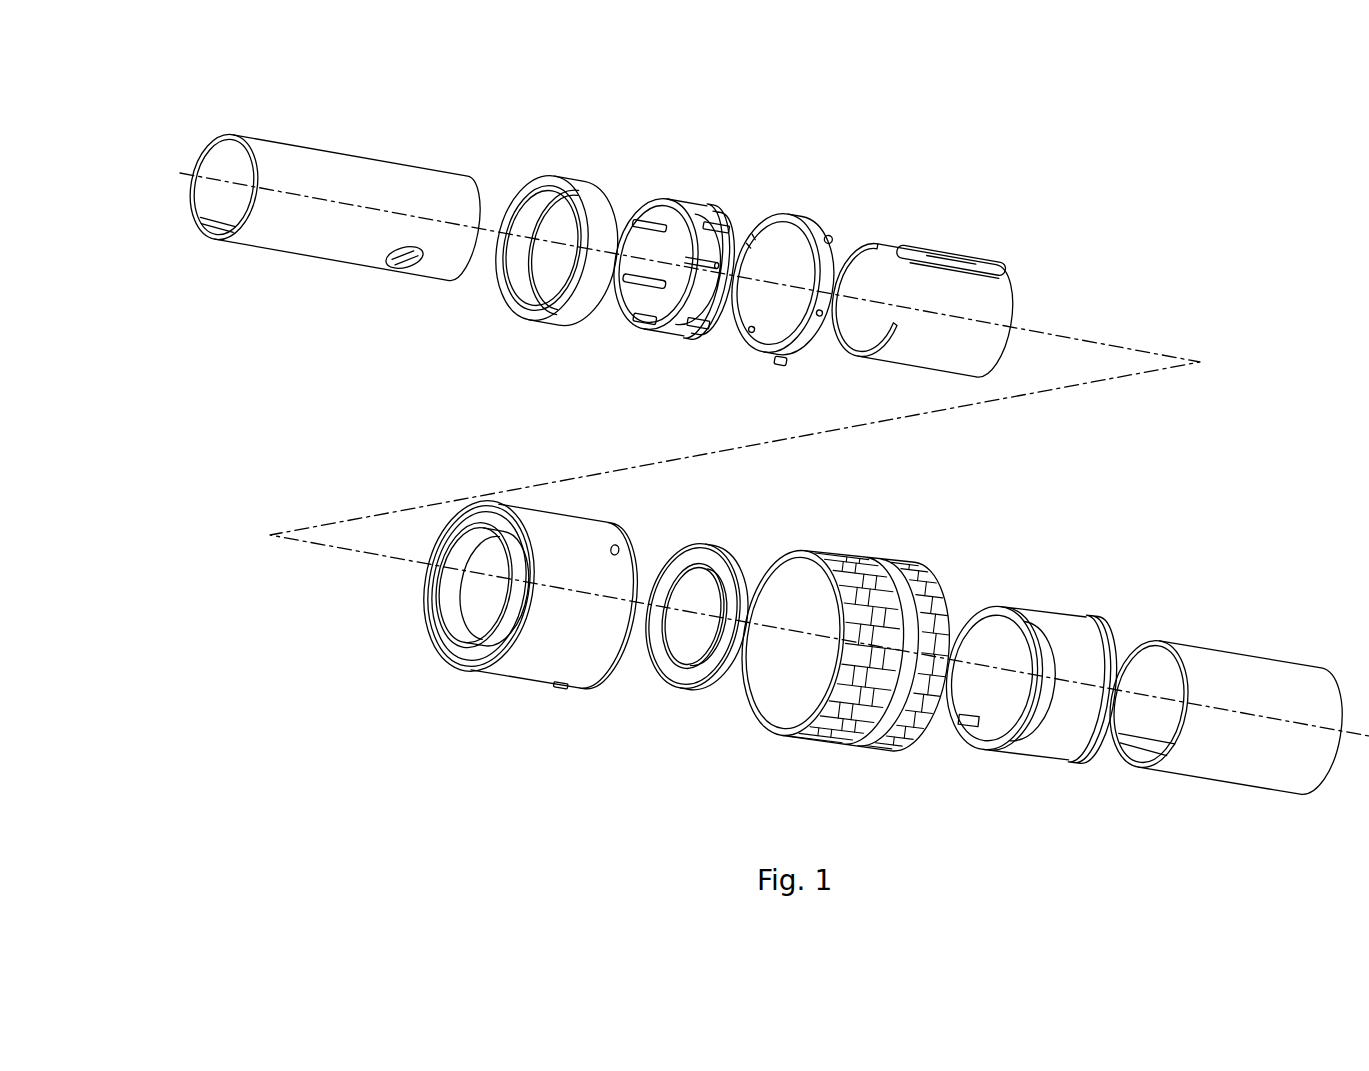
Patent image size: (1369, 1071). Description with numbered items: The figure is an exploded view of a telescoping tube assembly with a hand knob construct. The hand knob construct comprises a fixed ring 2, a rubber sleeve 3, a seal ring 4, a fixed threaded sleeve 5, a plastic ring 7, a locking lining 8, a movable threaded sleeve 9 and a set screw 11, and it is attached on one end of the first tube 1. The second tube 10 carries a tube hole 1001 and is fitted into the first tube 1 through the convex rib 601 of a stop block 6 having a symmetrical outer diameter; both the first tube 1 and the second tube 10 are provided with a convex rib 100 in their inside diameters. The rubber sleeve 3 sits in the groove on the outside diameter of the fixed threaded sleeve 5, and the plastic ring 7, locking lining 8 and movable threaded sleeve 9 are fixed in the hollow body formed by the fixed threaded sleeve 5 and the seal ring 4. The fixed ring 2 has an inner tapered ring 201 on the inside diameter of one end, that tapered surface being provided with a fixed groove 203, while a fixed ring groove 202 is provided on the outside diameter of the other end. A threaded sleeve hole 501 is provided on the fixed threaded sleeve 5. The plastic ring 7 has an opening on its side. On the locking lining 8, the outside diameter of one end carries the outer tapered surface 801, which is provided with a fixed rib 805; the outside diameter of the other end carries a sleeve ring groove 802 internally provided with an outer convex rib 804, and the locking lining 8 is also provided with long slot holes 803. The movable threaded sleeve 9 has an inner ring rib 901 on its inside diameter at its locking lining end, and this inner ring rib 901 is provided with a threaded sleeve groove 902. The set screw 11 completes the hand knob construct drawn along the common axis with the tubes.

The first tube 1 is at (1200, 770).
The convex rib in the pipe 100 is at (212, 235).
The fixed ring 2 is at (1042, 730).
The inner tapered ring 201 is at (985, 612).
The fixed ring groove 202 is at (1085, 637).
The fixed groove 203 is at (940, 742).
The rubber sleeve 3 is at (812, 740).
The seal ring 4 is at (668, 695).
The fixed threaded sleeve 5 is at (508, 668).
The threaded sleeve hole 501 is at (622, 542).
The stop block 6 is at (955, 257).
The convex rib in the block 601 is at (900, 262).
The plastic ring 7 is at (832, 224).
The locking lining 8 is at (672, 200).
The outer tapered surface 801 is at (720, 322).
The sleeve ring groove 802 is at (673, 330).
The long slot hole 803 is at (630, 316).
The outer convex rib 804 is at (714, 224).
The fixed rib 805 is at (724, 242).
The movable threaded sleeve 9 is at (596, 192).
The inner ring rib 901 is at (548, 188).
The threaded sleeve groove 902 is at (520, 312).
The second tube 10 is at (372, 258).
The tube hole 1001 is at (407, 272).
The set screw 11 is at (787, 364).